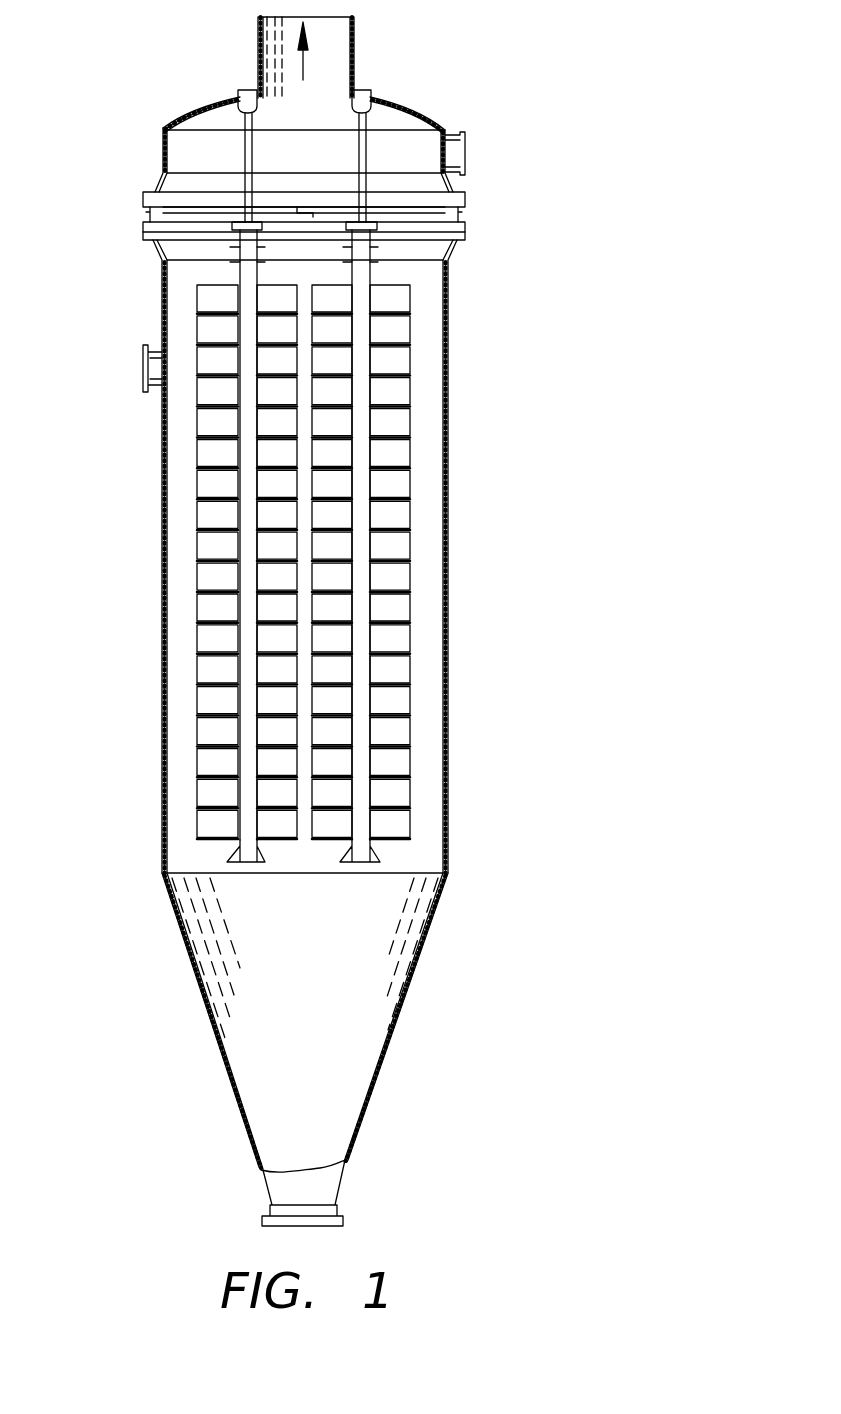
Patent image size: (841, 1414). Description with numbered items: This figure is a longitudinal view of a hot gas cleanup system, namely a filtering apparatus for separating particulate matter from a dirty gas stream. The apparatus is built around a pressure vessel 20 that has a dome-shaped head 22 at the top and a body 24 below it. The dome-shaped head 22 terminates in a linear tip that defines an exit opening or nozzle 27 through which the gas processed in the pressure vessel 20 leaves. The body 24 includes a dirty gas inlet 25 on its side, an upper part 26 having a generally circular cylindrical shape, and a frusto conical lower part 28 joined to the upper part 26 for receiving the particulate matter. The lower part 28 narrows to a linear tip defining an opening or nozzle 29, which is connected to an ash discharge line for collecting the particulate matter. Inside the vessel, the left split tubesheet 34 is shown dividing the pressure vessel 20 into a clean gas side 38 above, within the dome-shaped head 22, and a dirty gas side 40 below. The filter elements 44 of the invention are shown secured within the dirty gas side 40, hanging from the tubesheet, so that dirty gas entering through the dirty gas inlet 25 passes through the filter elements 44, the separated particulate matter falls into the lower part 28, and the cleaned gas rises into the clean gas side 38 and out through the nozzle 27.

The pressure vessel 20 is at (455, 443).
The dome-shaped head 22 is at (415, 110).
The body 24 is at (346, 556).
The dirty gas inlet 25 is at (145, 368).
The upper part 26 is at (448, 363).
The exit opening or nozzle 27 is at (352, 41).
The frusto conical lower part 28 is at (407, 992).
The opening or nozzle 29 is at (313, 1188).
The left split tubesheet 34 is at (143, 228).
The clean gas side 38 is at (195, 150).
The dirty gas side 40 is at (180, 672).
The filter elements 44 is at (390, 828).